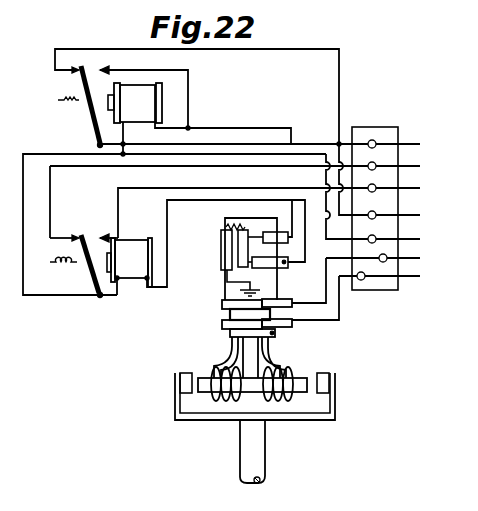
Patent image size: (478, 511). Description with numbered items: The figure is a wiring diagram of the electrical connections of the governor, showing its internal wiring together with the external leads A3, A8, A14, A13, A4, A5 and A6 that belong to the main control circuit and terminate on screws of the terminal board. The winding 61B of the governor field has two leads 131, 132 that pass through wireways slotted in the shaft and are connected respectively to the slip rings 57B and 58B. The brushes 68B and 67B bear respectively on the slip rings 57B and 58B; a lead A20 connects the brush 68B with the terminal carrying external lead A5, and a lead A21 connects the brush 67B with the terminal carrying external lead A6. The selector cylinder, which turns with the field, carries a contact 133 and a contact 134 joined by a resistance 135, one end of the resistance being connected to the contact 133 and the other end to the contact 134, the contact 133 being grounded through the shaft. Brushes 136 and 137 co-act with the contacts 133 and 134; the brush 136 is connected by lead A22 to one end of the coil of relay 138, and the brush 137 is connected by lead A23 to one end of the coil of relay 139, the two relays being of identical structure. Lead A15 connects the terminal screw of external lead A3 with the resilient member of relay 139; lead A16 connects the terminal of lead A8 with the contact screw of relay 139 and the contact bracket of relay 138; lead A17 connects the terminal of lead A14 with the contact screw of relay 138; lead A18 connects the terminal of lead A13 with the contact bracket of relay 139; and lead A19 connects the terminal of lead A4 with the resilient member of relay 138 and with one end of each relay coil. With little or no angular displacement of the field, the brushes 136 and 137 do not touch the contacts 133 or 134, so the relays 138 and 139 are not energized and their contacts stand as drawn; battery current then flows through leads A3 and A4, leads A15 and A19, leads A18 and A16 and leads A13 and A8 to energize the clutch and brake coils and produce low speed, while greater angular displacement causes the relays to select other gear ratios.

The relay 139 is at (199, 119).
The relay 138 is at (211, 230).
The lead A16 is at (189, 93).
The lead A18 is at (334, 52).
The lead A23 is at (245, 130).
The lead A15 is at (334, 142).
The lead A19 is at (68, 158).
The lead A17 is at (185, 190).
The lead A20 is at (347, 254).
The lead A21 is at (340, 320).
The lead A22 is at (172, 288).
The lead A3 is at (405, 144).
The lead A8 is at (405, 166).
The lead A14 is at (409, 189).
The lead A13 is at (409, 216).
The lead A4 is at (405, 240).
The lead A5 is at (384, 259).
The lead A6 is at (390, 277).
The contact 133 is at (221, 244).
The contact 134 is at (248, 234).
The resistance 135 is at (228, 226).
The brush 136 is at (268, 262).
The brush 137 is at (275, 237).
The slip ring 57B is at (222, 306).
The slip ring 58B is at (222, 326).
The brush 68B is at (283, 302).
The brush 67B is at (284, 321).
The lead 131 is at (228, 348).
The lead 132 is at (270, 348).
The winding 61B is at (294, 378).